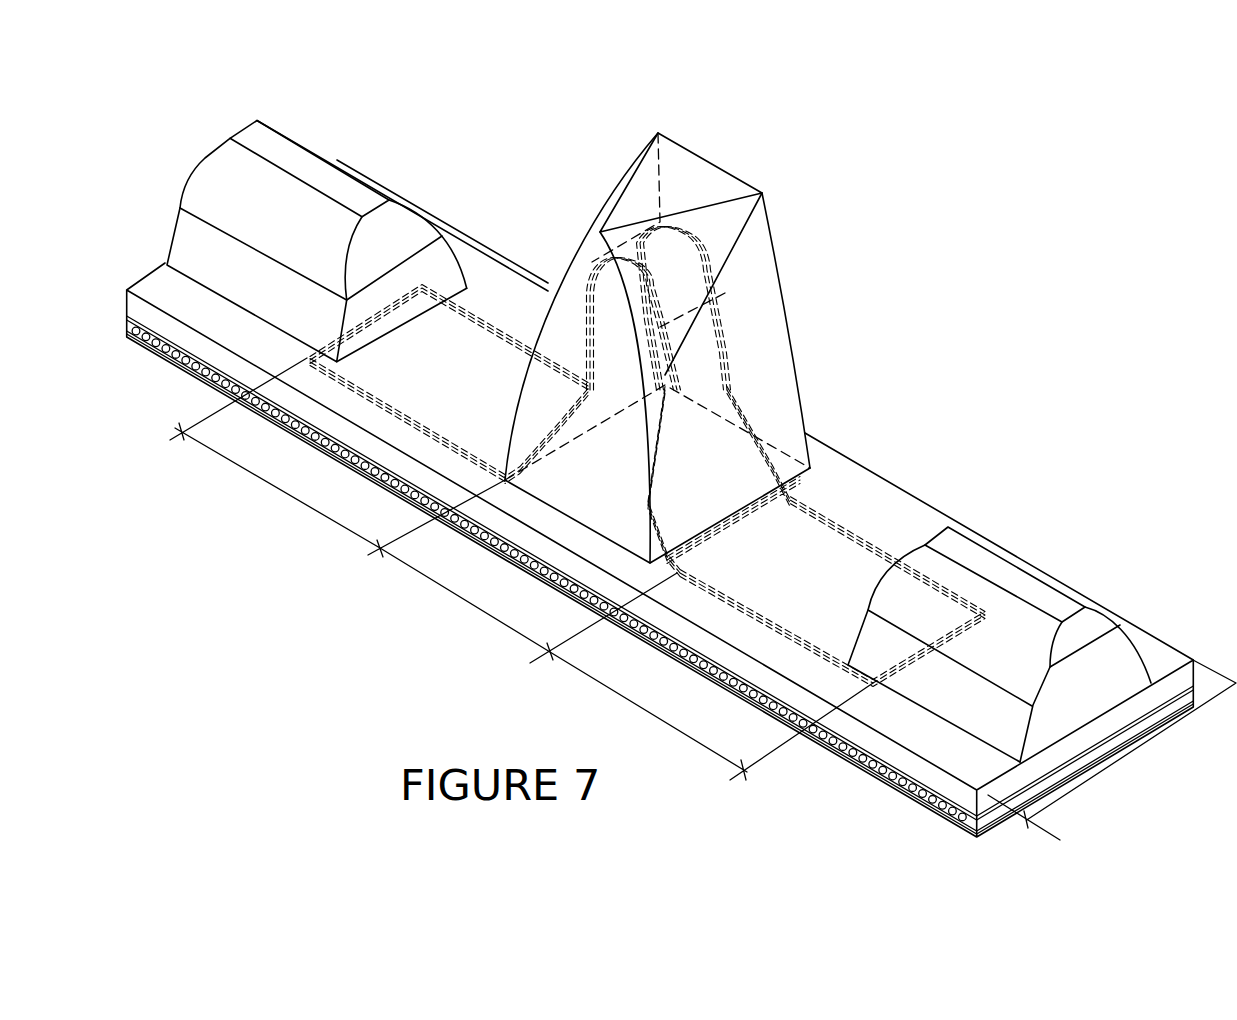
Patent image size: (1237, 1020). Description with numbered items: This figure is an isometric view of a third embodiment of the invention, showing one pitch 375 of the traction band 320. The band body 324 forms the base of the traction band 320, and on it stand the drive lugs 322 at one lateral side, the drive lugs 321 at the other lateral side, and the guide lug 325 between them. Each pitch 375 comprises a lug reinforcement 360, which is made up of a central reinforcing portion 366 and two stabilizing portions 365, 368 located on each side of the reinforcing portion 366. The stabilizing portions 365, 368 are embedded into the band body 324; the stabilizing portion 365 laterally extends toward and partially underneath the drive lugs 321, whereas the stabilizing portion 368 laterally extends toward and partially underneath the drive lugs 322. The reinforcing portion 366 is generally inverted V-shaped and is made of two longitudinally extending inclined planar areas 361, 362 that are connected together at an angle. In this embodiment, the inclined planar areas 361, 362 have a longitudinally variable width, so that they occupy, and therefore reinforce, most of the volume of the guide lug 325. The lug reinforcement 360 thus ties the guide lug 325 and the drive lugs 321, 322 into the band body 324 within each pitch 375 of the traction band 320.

The traction band 320 is at (936, 500).
The drive lugs 321 is at (1050, 569).
The drive lugs 322 is at (302, 142).
The band body 324 is at (851, 729).
The guide lug 325 is at (800, 394).
The lug reinforcement 360 is at (839, 510).
The inclined planar area 361 is at (729, 323).
The inclined planar area 362 is at (579, 308).
The stabilizing portion 365 is at (610, 688).
The reinforcing portion 366 is at (458, 594).
The stabilizing portion 368 is at (238, 474).
The pitch 375 is at (1102, 772).